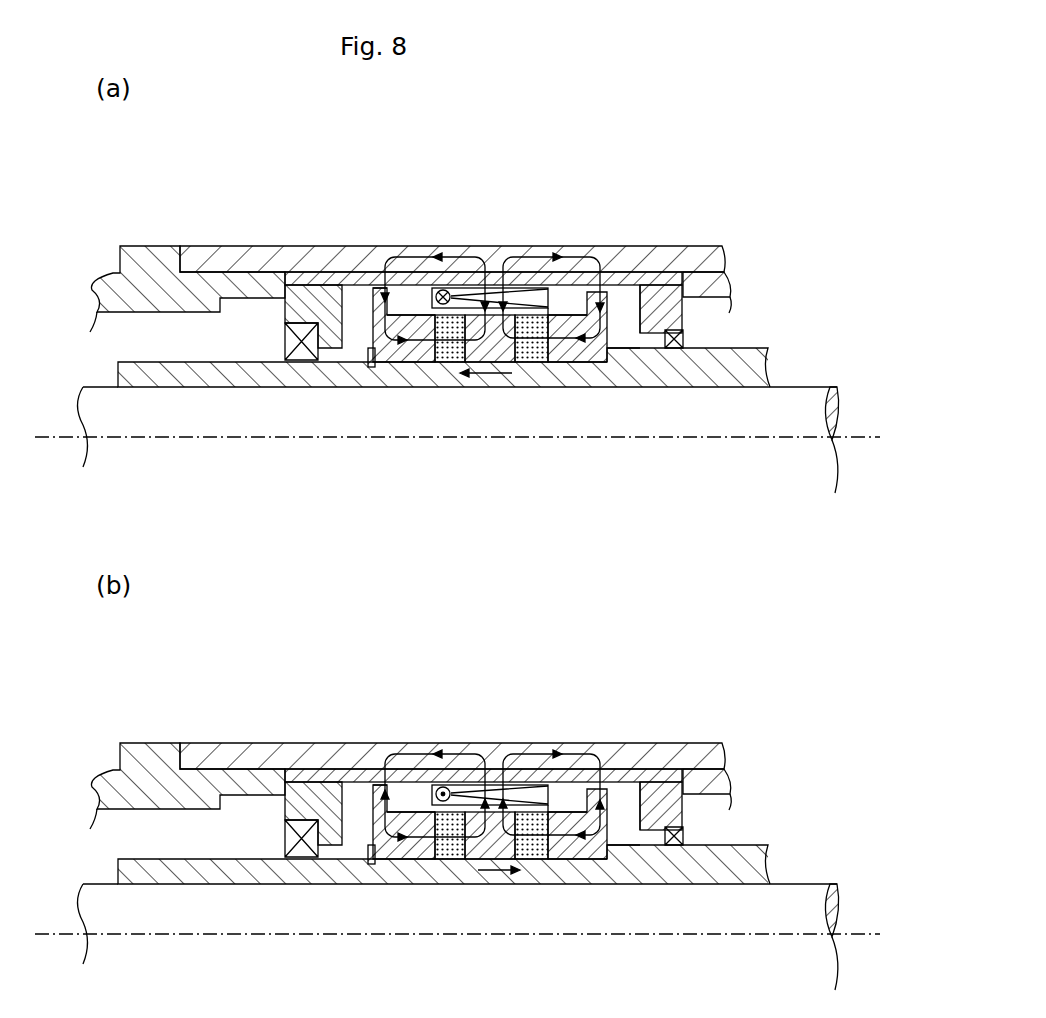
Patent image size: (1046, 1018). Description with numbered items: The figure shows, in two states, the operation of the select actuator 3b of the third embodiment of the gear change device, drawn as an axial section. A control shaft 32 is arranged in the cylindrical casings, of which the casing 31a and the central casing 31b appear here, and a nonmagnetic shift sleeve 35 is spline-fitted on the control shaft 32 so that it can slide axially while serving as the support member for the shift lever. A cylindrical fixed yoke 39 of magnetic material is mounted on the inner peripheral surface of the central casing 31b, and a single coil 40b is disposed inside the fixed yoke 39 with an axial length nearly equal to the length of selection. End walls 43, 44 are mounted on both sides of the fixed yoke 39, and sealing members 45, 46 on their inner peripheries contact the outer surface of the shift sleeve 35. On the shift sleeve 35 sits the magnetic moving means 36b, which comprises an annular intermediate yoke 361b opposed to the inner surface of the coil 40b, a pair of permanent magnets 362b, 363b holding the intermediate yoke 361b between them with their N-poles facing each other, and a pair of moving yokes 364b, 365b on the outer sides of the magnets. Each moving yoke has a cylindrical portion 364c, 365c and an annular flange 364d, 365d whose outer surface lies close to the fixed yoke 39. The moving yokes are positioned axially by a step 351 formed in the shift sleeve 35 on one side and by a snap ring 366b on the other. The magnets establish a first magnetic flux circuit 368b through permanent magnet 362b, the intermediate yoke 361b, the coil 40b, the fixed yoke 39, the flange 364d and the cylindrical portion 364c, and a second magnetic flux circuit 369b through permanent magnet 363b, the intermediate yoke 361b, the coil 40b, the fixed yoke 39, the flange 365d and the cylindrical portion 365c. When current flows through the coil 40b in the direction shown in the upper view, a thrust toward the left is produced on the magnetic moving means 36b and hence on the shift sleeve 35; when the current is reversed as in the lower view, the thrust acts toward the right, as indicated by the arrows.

In FIG. 8A, the select actuator 3b is at (508, 218).
In FIG. 8B, the select actuator 3b is at (509, 730).
In FIG. 8A, the casing 31a is at (158, 246).
In FIG. 8B, the casing 31a is at (407, 747).
In FIG. 8A, the central casing 31b is at (690, 270).
In FIG. 8B, the central casing 31b is at (712, 723).
In FIG. 8A, the control shaft 32 is at (102, 397).
In FIG. 8B, the control shaft 32 is at (457, 902).
In FIG. 8A, the shift sleeve 35 is at (185, 365).
In FIG. 8B, the shift sleeve 35 is at (444, 850).
In FIG. 8A, the step 351 is at (612, 370).
In FIG. 8B, the step 351 is at (688, 883).
In FIG. 8A, the magnetic moving means 36b is at (672, 295).
In FIG. 8B, the magnetic moving means 36b is at (712, 768).
In FIG. 8A, the fixed yoke 39 is at (318, 278).
In FIG. 8B, the fixed yoke 39 is at (479, 714).
In FIG. 8A, the coil 40b is at (447, 290).
In FIG. 8B, the coil 40b is at (463, 741).
In FIG. 8A, the end wall 43 is at (622, 328).
In FIG. 8B, the end wall 43 is at (691, 797).
In FIG. 8A, the end wall 44 is at (283, 312).
In FIG. 8B, the end wall 44 is at (276, 764).
In FIG. 8A, the sealing member 45 is at (687, 342).
In FIG. 8B, the sealing member 45 is at (720, 827).
In FIG. 8A, the sealing member 46 is at (285, 350).
In FIG. 8B, the sealing member 46 is at (263, 838).
In FIG. 8A, the intermediate yoke 361b is at (515, 302).
In FIG. 8B, the intermediate yoke 361b is at (512, 734).
In FIG. 8A, the permanent magnet 362b is at (528, 355).
In FIG. 8B, the permanent magnet 362b is at (529, 871).
In FIG. 8A, the permanent magnet 363b is at (452, 355).
In FIG. 8B, the permanent magnet 363b is at (443, 871).
In FIG. 8A, the moving yoke 364b is at (577, 366).
In FIG. 8B, the moving yoke 364b is at (593, 886).
In FIG. 8A, the cylindrical portion 364c is at (572, 318).
In FIG. 8B, the cylindrical portion 364c is at (600, 754).
In FIG. 8A, the flange 364d is at (642, 305).
In FIG. 8B, the flange 364d is at (662, 750).
In FIG. 8A, the moving yoke 365b is at (403, 366).
In FIG. 8B, the moving yoke 365b is at (392, 884).
In FIG. 8A, the cylindrical portion 365c is at (395, 318).
In FIG. 8B, the cylindrical portion 365c is at (403, 731).
In FIG. 8A, the flange 365d is at (378, 292).
In FIG. 8B, the flange 365d is at (354, 734).
In FIG. 8A, the snap ring 366b is at (370, 360).
In FIG. 8B, the snap ring 366b is at (326, 884).
In FIG. 8A, the first magnetic flux circuit 368b is at (580, 290).
In FIG. 8B, the first magnetic flux circuit 368b is at (574, 728).
In FIG. 8A, the second magnetic flux circuit 369b is at (423, 275).
In FIG. 8B, the second magnetic flux circuit 369b is at (435, 723).